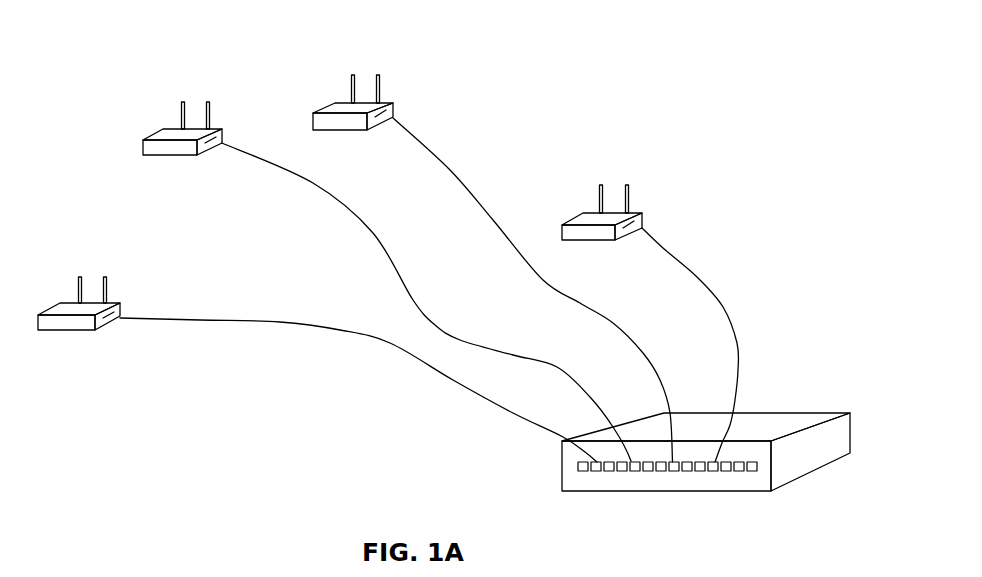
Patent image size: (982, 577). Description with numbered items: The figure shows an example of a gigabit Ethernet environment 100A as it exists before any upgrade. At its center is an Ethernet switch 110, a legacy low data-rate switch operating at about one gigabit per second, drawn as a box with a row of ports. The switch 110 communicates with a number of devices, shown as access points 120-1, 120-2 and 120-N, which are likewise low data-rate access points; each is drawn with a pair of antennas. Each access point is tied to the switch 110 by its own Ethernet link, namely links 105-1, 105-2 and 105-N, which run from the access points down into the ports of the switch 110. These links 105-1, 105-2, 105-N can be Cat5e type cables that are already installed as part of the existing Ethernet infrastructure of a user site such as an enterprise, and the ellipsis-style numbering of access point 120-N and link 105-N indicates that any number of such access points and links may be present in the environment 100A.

The gigabit Ethernet environment 100A is at (714, 104).
The Ethernet switch 110 is at (694, 496).
The access point 120-1 is at (79, 319).
The access point 120-2 is at (182, 148).
The access point 120-N is at (602, 228).
The Ethernet link 105-1 is at (358, 390).
The Ethernet link 105-2 is at (426, 302).
The Ethernet link 105-N is at (712, 345).